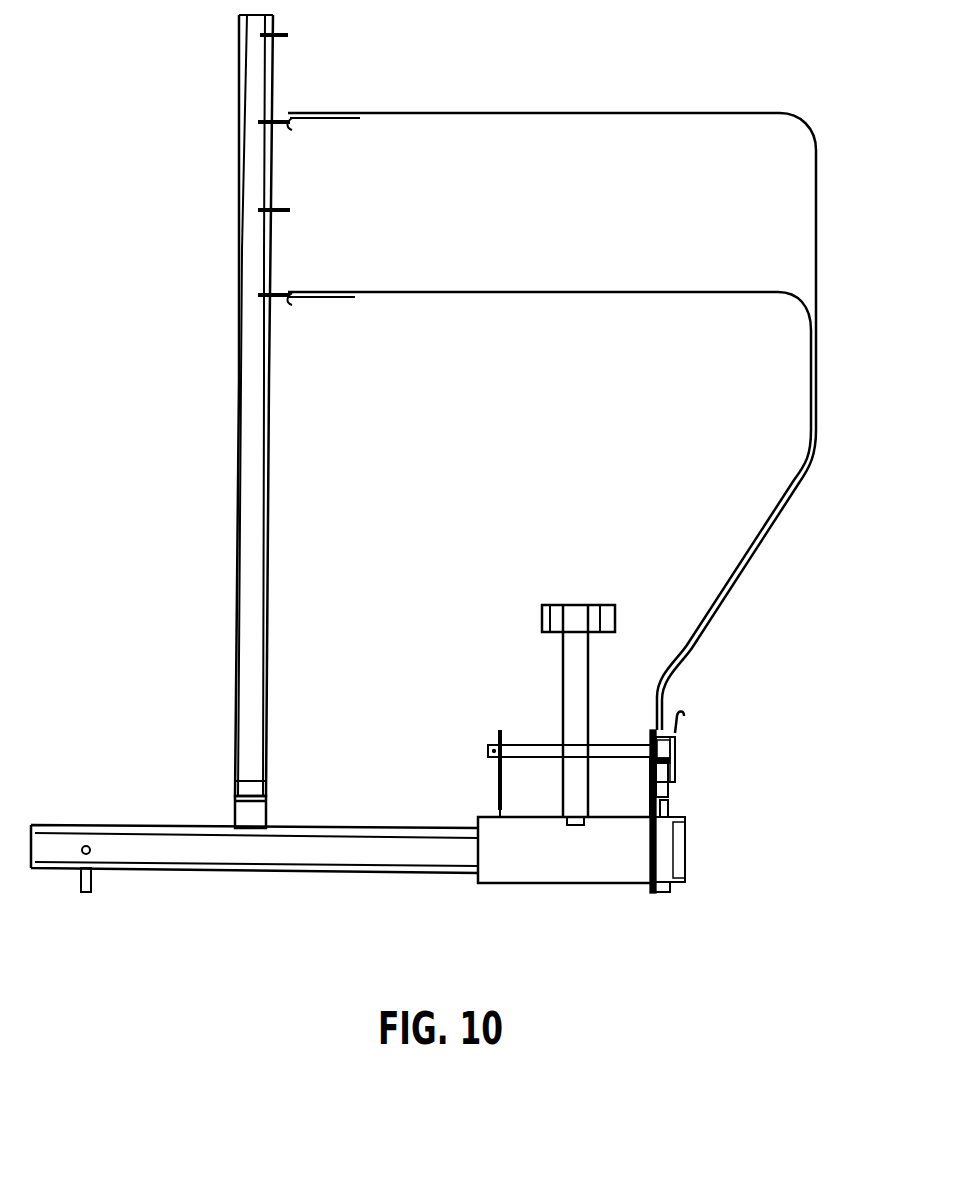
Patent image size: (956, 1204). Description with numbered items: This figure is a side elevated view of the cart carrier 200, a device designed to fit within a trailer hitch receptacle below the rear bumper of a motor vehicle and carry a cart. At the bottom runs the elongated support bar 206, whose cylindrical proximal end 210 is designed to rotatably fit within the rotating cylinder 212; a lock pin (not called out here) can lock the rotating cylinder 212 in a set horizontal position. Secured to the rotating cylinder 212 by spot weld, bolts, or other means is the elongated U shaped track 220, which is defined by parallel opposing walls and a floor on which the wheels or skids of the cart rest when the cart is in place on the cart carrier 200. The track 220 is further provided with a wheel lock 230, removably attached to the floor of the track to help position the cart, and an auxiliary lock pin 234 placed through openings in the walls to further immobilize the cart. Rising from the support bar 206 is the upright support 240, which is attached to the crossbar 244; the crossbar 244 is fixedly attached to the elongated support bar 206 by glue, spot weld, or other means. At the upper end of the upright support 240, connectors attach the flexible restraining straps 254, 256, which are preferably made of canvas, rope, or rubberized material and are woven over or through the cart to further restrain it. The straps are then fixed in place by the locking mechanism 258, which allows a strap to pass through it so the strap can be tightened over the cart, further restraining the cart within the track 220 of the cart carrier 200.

The cart carrier 200 is at (150, 540).
The elongated support bar 206 is at (340, 870).
The proximal end of the support bar 210 is at (690, 860).
The rotating cylinder 212 is at (576, 865).
The elongated U shaped track 220 is at (494, 783).
The wheel lock 230 is at (568, 605).
The auxiliary lock pin 234 is at (530, 745).
The upright support 240 is at (240, 135).
The crossbar 244 is at (232, 810).
The flexible restraining strap 254 is at (472, 297).
The flexible restraining strap 256 is at (403, 118).
The locking mechanism 258 is at (670, 752).